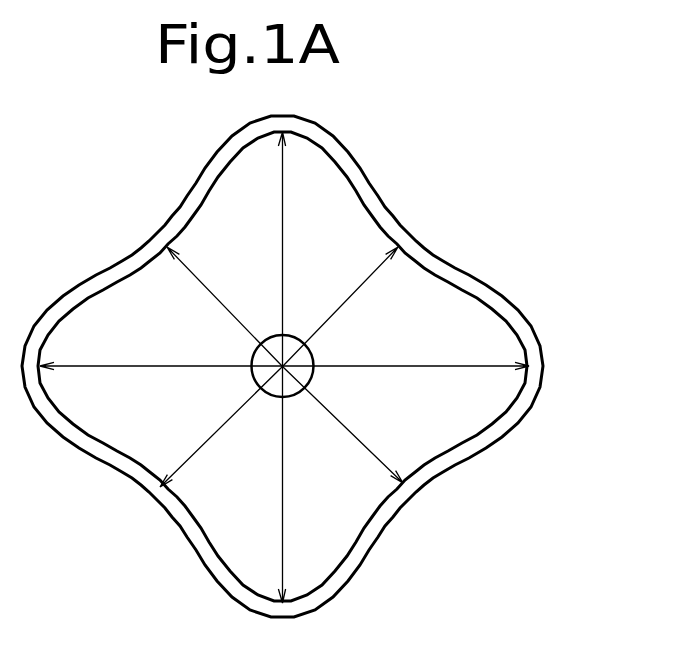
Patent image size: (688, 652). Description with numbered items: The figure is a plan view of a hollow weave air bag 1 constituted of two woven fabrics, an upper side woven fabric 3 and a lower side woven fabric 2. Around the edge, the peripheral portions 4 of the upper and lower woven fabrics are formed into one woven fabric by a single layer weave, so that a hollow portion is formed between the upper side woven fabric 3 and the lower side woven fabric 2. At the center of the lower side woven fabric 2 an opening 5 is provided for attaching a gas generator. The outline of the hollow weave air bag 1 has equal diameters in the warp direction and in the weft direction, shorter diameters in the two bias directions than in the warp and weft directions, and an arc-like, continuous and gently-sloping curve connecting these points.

The hollow weave air bag 1 is at (296, 366).
The lower side woven fabric 2 is at (282, 366).
The upper side woven fabric 3 is at (282, 366).
The peripheral portions 4 is at (523, 327).
The opening 5 is at (302, 355).